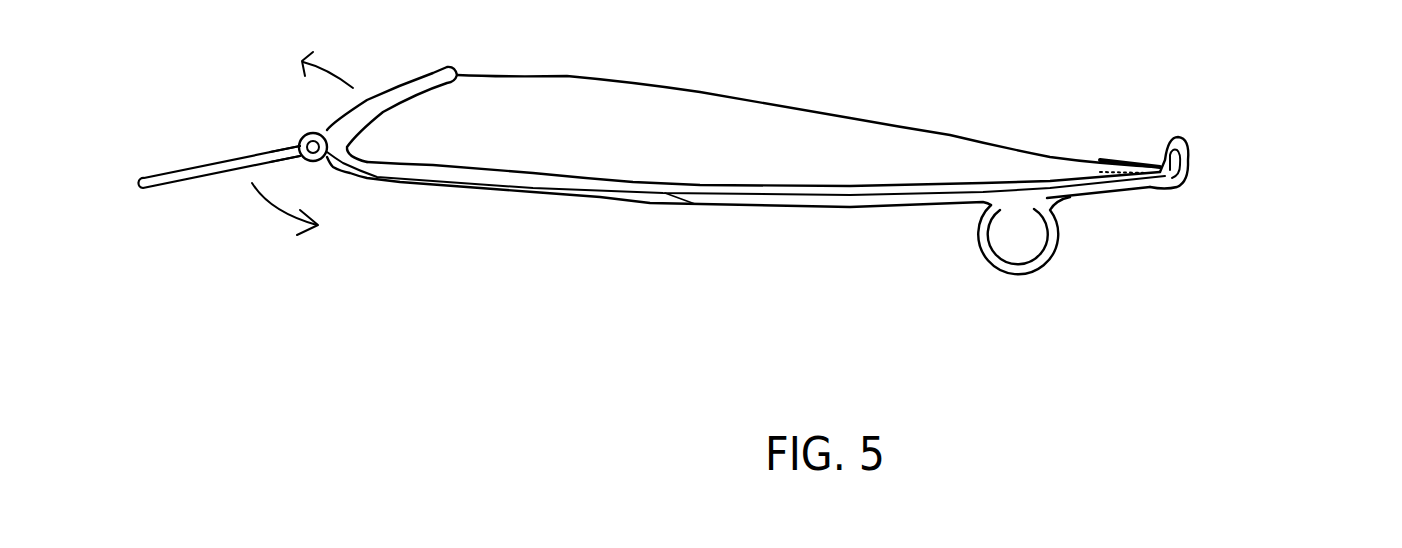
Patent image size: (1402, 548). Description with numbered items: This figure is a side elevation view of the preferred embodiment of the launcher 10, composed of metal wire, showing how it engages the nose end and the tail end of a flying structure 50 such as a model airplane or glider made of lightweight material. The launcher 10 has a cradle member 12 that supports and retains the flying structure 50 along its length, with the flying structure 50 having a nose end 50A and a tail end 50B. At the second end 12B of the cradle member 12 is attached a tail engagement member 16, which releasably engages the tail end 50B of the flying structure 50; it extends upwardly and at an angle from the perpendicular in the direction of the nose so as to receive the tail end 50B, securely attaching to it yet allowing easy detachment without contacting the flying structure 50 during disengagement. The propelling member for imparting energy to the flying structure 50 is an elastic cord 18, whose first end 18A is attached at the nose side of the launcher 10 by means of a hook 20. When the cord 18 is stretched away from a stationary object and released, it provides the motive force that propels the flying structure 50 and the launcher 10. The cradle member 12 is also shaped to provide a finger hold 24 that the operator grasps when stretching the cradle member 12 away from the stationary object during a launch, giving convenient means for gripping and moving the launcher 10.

The launcher 10 is at (668, 373).
The cradle member 12 is at (765, 207).
The second end of the cradle member 12B is at (1157, 190).
The tail engagement member 16 is at (1183, 148).
The elastic cord 18 is at (145, 177).
The first end of the elastic cord 18A is at (274, 152).
The hook 20 is at (322, 160).
The finger hold 24 is at (1013, 277).
The flying structure 50 is at (722, 97).
The nose end of the flying structure 50A is at (377, 137).
The tail end of the flying structure 50B is at (1065, 153).